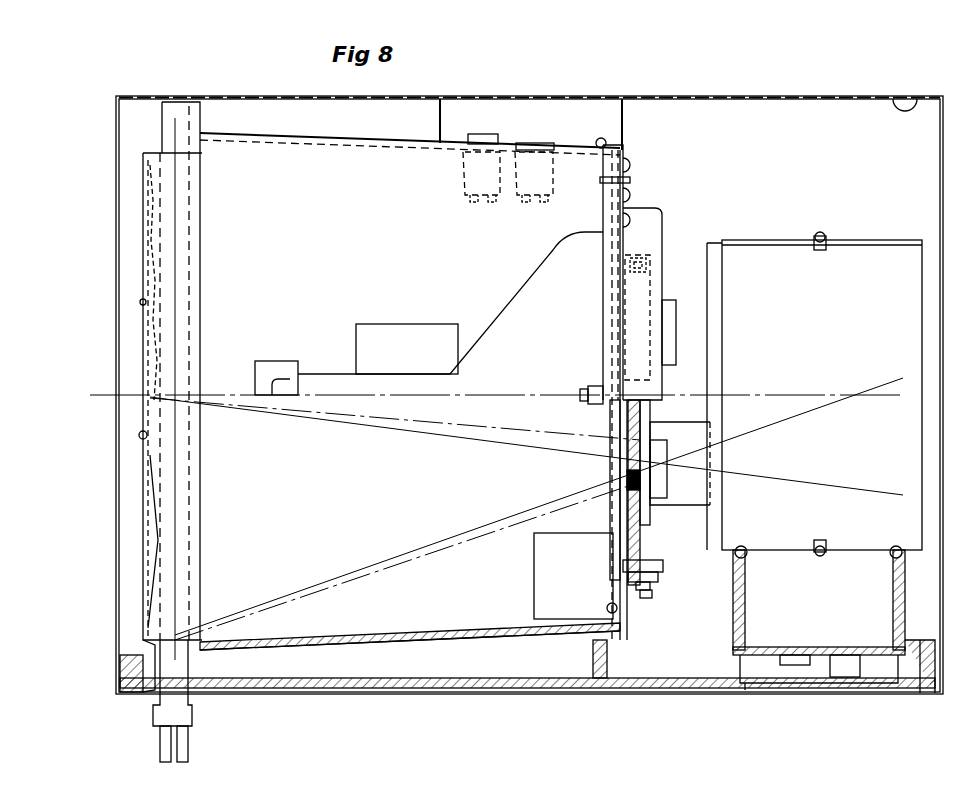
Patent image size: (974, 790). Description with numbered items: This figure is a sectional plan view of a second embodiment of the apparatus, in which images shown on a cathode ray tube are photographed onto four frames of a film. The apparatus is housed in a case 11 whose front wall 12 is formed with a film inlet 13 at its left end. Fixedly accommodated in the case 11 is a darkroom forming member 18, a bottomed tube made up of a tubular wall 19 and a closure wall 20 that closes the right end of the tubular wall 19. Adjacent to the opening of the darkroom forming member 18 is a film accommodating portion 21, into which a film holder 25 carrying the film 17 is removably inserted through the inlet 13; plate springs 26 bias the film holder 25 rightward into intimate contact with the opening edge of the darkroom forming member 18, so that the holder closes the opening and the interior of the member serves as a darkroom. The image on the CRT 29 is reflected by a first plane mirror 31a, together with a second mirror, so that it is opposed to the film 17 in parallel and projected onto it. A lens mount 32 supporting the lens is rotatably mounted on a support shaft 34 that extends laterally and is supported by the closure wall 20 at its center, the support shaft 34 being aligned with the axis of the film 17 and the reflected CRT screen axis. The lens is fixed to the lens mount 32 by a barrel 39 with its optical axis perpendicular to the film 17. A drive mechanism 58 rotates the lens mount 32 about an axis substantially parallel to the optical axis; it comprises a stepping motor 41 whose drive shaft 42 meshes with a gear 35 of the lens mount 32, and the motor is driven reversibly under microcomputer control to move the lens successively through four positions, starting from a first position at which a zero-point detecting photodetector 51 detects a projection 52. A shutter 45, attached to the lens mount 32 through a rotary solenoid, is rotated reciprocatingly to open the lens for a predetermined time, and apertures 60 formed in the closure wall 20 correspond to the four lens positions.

The case 11 is at (822, 97).
The front wall 12 is at (540, 692).
The film inlet 13 is at (150, 690).
The film 17 is at (176, 506).
The darkroom forming member 18 is at (438, 645).
The tubular wall 19 is at (388, 650).
The closure wall 20 is at (628, 498).
The film accommodating portion 21 is at (143, 522).
The film holder 25 is at (167, 712).
The plate springs 26 is at (148, 237).
The CRT 29 is at (514, 303).
The first plane mirror 31a is at (712, 243).
The lens mount 32 is at (642, 512).
The support shaft 34 is at (590, 394).
The gear 35 is at (650, 527).
The barrel 39 is at (697, 502).
The stepping motor 41 is at (535, 566).
The drive shaft 42 is at (660, 578).
The shutter 45 is at (603, 440).
The zero-point detecting photodetector 51 is at (650, 277).
The projection 52 is at (634, 286).
The drive mechanism 58 is at (648, 600).
The apertures 60 is at (620, 490).